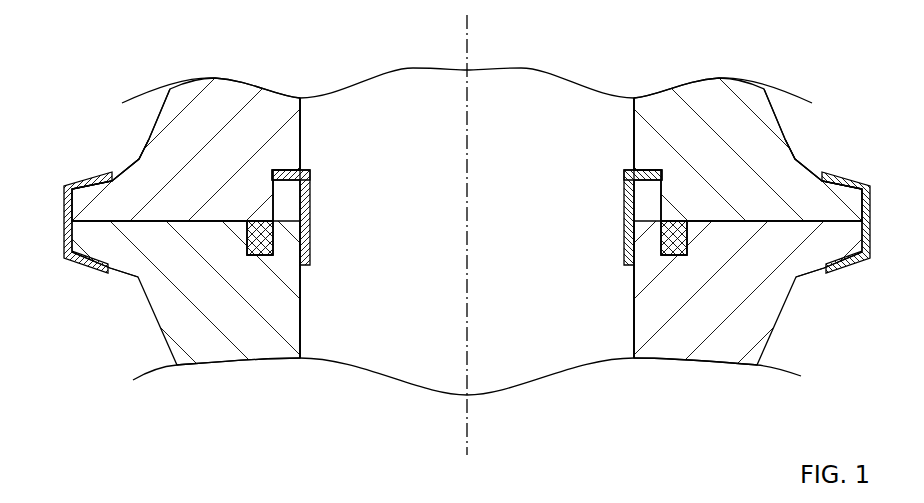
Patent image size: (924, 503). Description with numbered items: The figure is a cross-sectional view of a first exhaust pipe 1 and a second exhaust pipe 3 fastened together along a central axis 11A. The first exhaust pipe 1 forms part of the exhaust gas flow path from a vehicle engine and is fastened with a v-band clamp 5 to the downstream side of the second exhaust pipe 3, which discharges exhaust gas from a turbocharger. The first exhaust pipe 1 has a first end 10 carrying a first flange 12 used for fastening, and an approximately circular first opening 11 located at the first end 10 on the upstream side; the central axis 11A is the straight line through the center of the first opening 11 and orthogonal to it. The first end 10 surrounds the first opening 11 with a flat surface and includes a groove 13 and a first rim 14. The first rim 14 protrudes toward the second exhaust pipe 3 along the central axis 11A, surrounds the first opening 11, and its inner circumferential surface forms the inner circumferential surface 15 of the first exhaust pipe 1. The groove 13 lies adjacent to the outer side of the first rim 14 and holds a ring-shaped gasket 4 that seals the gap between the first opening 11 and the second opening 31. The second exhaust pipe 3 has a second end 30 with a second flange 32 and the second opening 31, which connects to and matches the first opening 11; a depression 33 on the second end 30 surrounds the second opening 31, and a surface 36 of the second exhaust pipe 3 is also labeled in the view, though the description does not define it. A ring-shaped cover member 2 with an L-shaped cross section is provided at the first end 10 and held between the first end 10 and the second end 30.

The first exhaust pipe 1 is at (767, 382).
The cover member 2 is at (310, 193).
The second exhaust pipe 3 is at (804, 57).
The gasket 4 is at (258, 240).
The v-band clamp 5 is at (59, 230).
The first end 10 is at (207, 222).
The first opening 11 is at (448, 204).
The central axis 11A is at (467, 255).
The first flange 12 is at (122, 247).
The groove 13 is at (267, 257).
The first rim 14 is at (293, 204).
The inner circumferential surface 15 is at (300, 293).
The second end 30 is at (181, 220).
The second opening 31 is at (495, 189).
The second flange 32 is at (122, 193).
The depression 33 is at (284, 171).
The inner surface of housing 36 is at (303, 118).